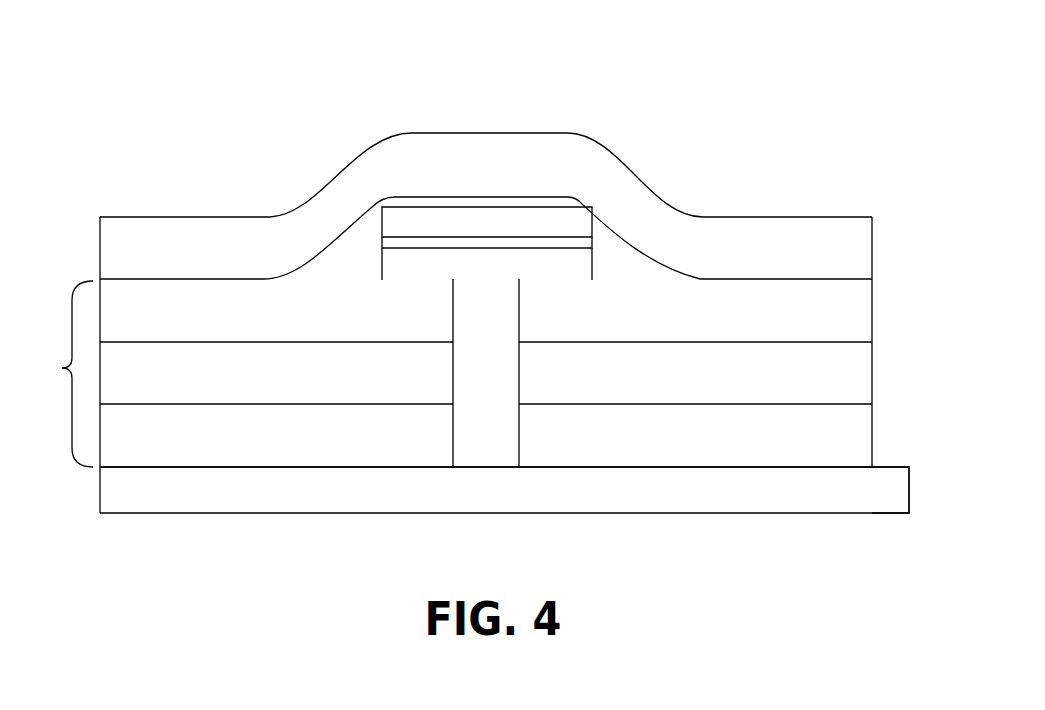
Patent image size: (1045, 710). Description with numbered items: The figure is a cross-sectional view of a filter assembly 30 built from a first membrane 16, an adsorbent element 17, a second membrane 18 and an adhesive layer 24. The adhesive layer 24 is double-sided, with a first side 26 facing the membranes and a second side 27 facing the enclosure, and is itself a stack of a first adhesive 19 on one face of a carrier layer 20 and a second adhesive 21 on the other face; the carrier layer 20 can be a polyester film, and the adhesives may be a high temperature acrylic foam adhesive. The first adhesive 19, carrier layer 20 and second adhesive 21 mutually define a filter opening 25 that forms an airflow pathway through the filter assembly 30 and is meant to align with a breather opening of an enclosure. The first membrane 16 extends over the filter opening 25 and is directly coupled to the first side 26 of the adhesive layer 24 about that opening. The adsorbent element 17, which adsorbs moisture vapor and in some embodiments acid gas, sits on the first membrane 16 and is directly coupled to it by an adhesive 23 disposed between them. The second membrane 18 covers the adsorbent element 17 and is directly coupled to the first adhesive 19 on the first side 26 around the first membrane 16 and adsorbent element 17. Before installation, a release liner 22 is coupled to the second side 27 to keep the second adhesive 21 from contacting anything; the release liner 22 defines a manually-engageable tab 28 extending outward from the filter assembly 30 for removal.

The filter assembly 30 is at (276, 62).
The second membrane 18 is at (848, 228).
The first side 26 is at (848, 261).
The adsorbent element 17 is at (517, 217).
The adhesive 23 is at (388, 243).
The first membrane 16 is at (578, 263).
The first adhesive 19 is at (858, 323).
The carrier layer 20 is at (860, 387).
The second adhesive 21 is at (860, 448).
The filter opening 25 is at (498, 372).
The adhesive layer 24 is at (62, 374).
The release liner 22 is at (98, 488).
The tab 28 is at (887, 493).
The second side 27 is at (782, 502).